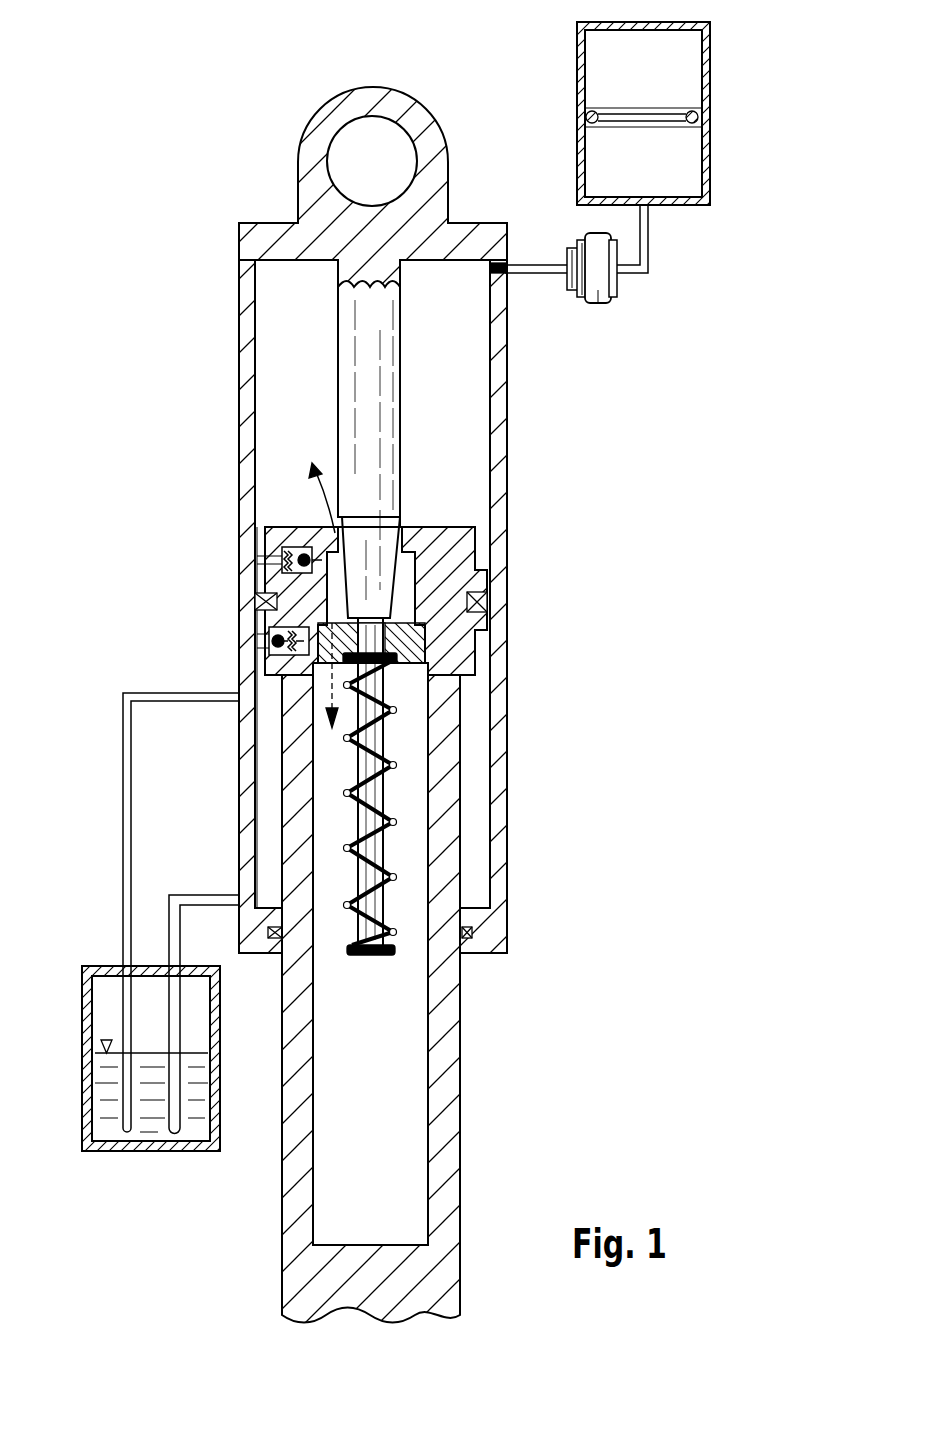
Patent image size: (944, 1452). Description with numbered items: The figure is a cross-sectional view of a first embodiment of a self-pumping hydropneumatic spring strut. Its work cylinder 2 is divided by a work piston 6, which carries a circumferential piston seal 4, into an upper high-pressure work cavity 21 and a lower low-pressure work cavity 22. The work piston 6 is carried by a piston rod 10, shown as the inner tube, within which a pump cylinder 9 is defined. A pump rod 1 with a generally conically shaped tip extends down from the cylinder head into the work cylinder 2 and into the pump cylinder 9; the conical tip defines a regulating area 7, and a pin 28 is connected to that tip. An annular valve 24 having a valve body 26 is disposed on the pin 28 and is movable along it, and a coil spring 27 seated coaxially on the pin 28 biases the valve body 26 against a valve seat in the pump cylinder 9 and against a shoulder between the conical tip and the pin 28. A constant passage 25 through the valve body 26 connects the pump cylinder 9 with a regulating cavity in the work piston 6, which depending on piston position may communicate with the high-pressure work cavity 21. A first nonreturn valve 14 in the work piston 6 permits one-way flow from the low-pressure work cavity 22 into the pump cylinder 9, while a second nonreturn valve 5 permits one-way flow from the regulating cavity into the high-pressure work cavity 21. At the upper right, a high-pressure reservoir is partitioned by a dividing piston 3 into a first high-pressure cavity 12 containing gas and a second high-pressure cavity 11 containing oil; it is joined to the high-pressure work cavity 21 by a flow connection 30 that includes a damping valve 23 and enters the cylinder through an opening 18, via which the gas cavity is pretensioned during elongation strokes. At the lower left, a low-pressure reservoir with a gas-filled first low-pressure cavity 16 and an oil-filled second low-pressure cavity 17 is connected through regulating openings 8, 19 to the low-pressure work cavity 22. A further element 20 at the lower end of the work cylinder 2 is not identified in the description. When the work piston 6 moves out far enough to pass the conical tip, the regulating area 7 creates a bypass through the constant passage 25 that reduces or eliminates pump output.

The pump rod 1 is at (358, 426).
The work cylinder 2 is at (497, 386).
The dividing piston 3 is at (670, 123).
The piston seal 4 is at (487, 603).
The second nonreturn valve 5 is at (292, 550).
The work piston 6 is at (445, 590).
The regulating area 7 is at (475, 562).
The regulating opening 8 is at (243, 692).
The pump cylinder 9 is at (393, 1087).
The piston rod 10 is at (448, 1138).
The second high-pressure cavity 11 is at (668, 168).
The first high-pressure cavity 12 is at (677, 80).
The first nonreturn valve 14 is at (270, 637).
The first low-pressure cavity 16 is at (103, 1009).
The second low-pressure cavity 17 is at (103, 1105).
The opening 18 is at (490, 266).
The regulating opening 19 is at (240, 893).
The bottom 20 is at (475, 933).
The high-pressure work cavity 21 is at (455, 473).
The low-pressure work cavity 22 is at (262, 805).
The damping valve 23 is at (600, 305).
The annular valve 24 is at (423, 653).
The constant passage 25 is at (313, 660).
The valve body 26 is at (412, 637).
The coil spring 27 is at (393, 823).
The pin 28 is at (370, 802).
The flow connection 30 is at (648, 253).